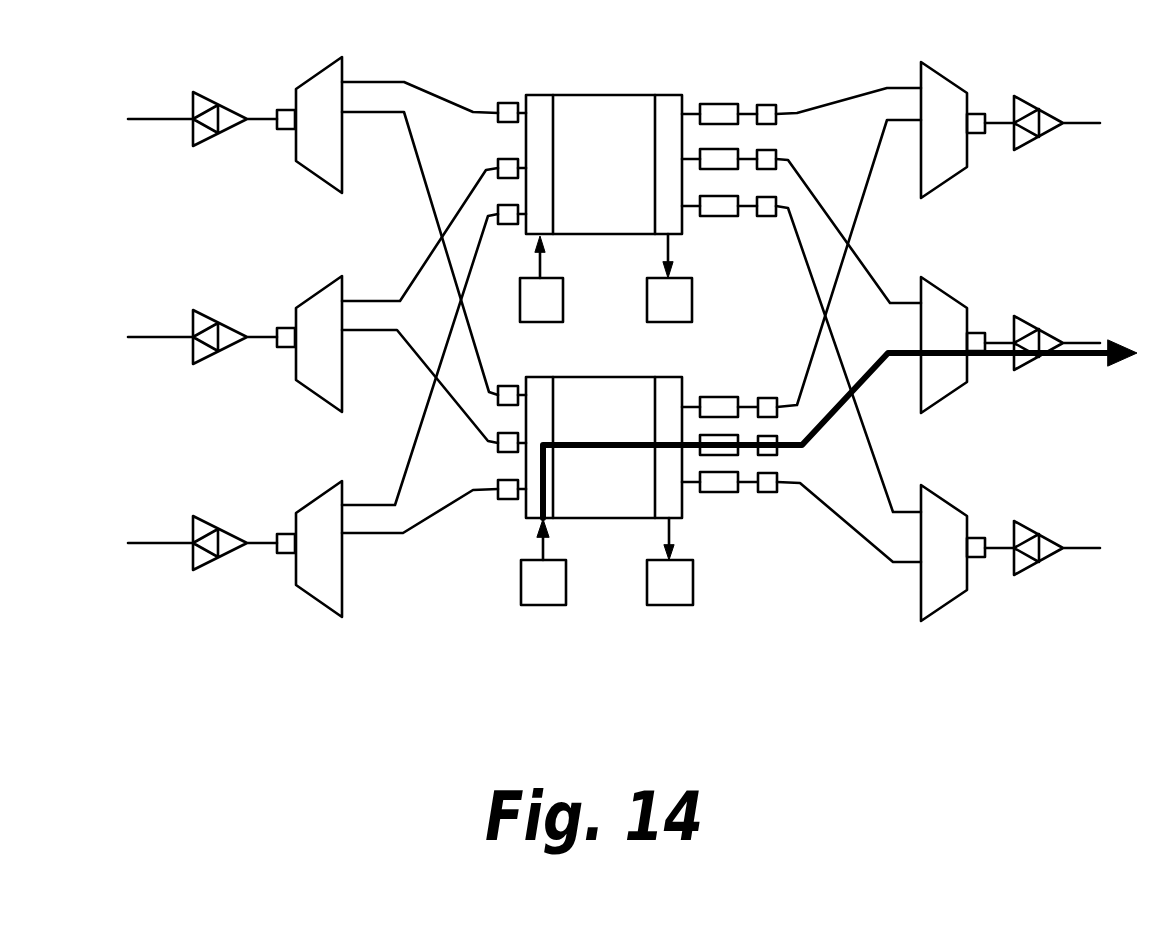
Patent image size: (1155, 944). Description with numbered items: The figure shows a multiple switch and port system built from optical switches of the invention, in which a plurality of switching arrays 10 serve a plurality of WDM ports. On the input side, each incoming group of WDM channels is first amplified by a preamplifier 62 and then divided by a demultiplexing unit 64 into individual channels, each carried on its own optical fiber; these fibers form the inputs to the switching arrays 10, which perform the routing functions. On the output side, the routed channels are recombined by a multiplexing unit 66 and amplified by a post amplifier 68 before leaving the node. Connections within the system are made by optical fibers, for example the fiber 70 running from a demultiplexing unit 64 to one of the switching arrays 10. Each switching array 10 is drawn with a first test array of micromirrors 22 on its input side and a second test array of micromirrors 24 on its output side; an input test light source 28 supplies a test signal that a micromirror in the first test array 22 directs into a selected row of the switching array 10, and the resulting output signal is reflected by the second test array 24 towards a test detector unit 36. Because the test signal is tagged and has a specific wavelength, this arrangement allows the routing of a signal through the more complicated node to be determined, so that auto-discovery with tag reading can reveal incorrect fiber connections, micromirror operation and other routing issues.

The switching array 10 is at (613, 95).
The first test array of micromirrors 22 is at (540, 95).
The second test array of micromirrors 24 is at (666, 95).
The input test light source 28 is at (550, 302).
The test detector unit 36 is at (683, 302).
The preamplifier 62 is at (209, 141).
The demultiplexing unit 64 is at (318, 88).
The multiplexing unit 66 is at (950, 83).
The post amplifier 68 is at (1050, 133).
The optical fiber 70 is at (424, 90).